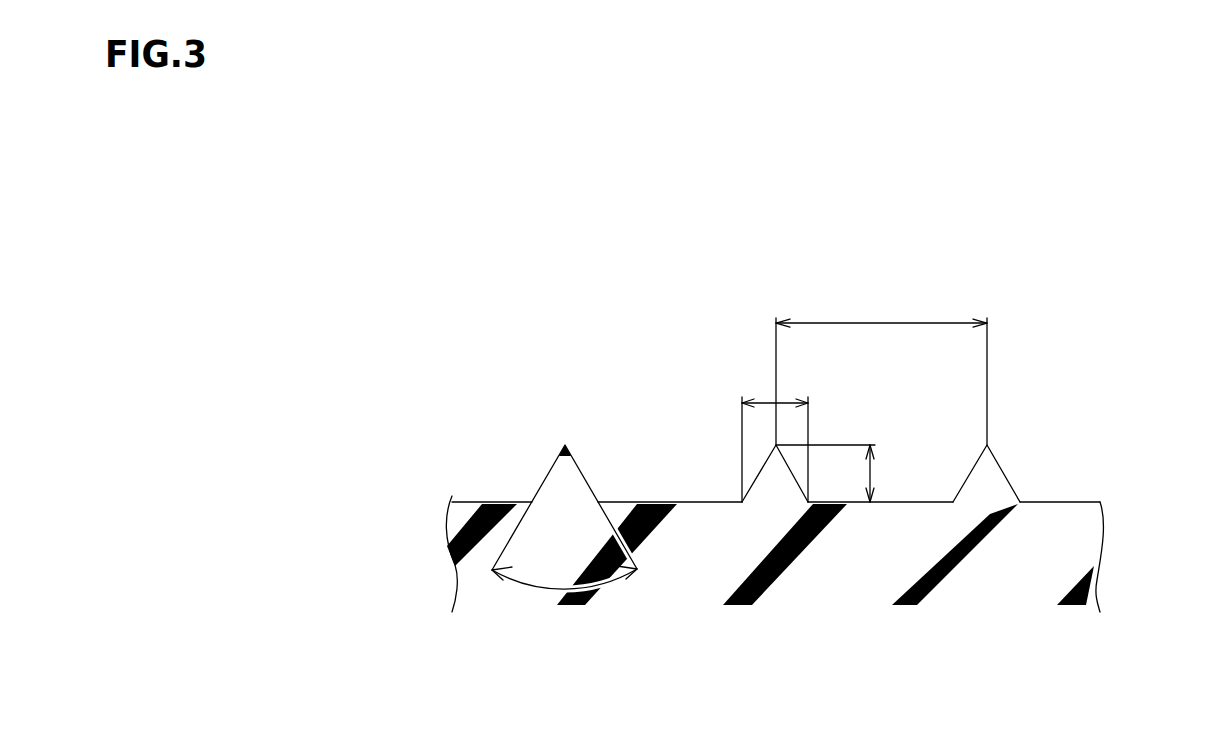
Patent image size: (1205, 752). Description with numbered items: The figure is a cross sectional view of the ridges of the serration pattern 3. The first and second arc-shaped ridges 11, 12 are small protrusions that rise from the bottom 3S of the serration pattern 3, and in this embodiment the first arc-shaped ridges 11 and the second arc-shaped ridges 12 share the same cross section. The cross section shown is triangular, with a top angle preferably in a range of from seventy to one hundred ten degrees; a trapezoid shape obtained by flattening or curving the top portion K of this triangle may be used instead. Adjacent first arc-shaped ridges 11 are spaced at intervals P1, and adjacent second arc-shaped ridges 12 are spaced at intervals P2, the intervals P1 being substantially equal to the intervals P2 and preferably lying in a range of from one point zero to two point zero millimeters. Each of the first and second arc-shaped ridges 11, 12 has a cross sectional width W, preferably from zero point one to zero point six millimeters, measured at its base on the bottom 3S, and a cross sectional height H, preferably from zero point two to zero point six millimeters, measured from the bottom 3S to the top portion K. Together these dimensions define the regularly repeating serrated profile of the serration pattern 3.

The serration pattern 3 is at (1060, 362).
The bottom of the serration pattern 3S is at (1065, 500).
The first arc-shaped ridges 11 is at (972, 438).
The second arc-shaped ridges 12 is at (990, 482).
The top portion K is at (565, 440).
The cross sectional width W is at (768, 398).
The cross sectional height H is at (839, 473).
The intervals between adjacent first arc-shaped ridges P1 is at (881, 365).
The intervals between adjacent second arc-shaped ridges P2 is at (881, 381).